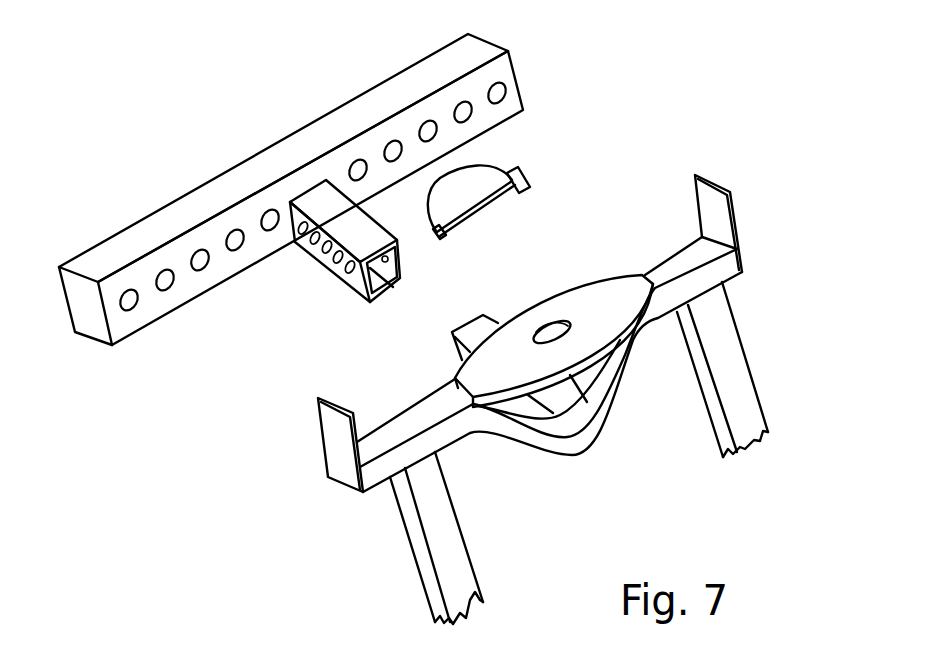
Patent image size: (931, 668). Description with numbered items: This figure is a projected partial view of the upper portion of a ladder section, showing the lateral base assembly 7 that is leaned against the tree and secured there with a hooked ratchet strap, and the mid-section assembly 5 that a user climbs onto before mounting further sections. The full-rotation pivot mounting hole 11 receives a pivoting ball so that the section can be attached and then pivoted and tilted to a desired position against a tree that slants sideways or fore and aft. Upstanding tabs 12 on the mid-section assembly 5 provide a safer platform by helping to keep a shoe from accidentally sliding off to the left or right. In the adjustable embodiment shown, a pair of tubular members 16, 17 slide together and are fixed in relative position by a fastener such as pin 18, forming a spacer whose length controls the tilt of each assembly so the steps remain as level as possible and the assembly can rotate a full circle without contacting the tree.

The mid-section assembly 5 is at (708, 277).
The lateral base assembly 7 is at (505, 68).
The 360 degree pivot mounting hole 11 is at (532, 338).
The tabs 12 is at (340, 467).
The tubular member 16 is at (355, 283).
The tubular member 17 is at (478, 327).
The pin 18 is at (533, 183).